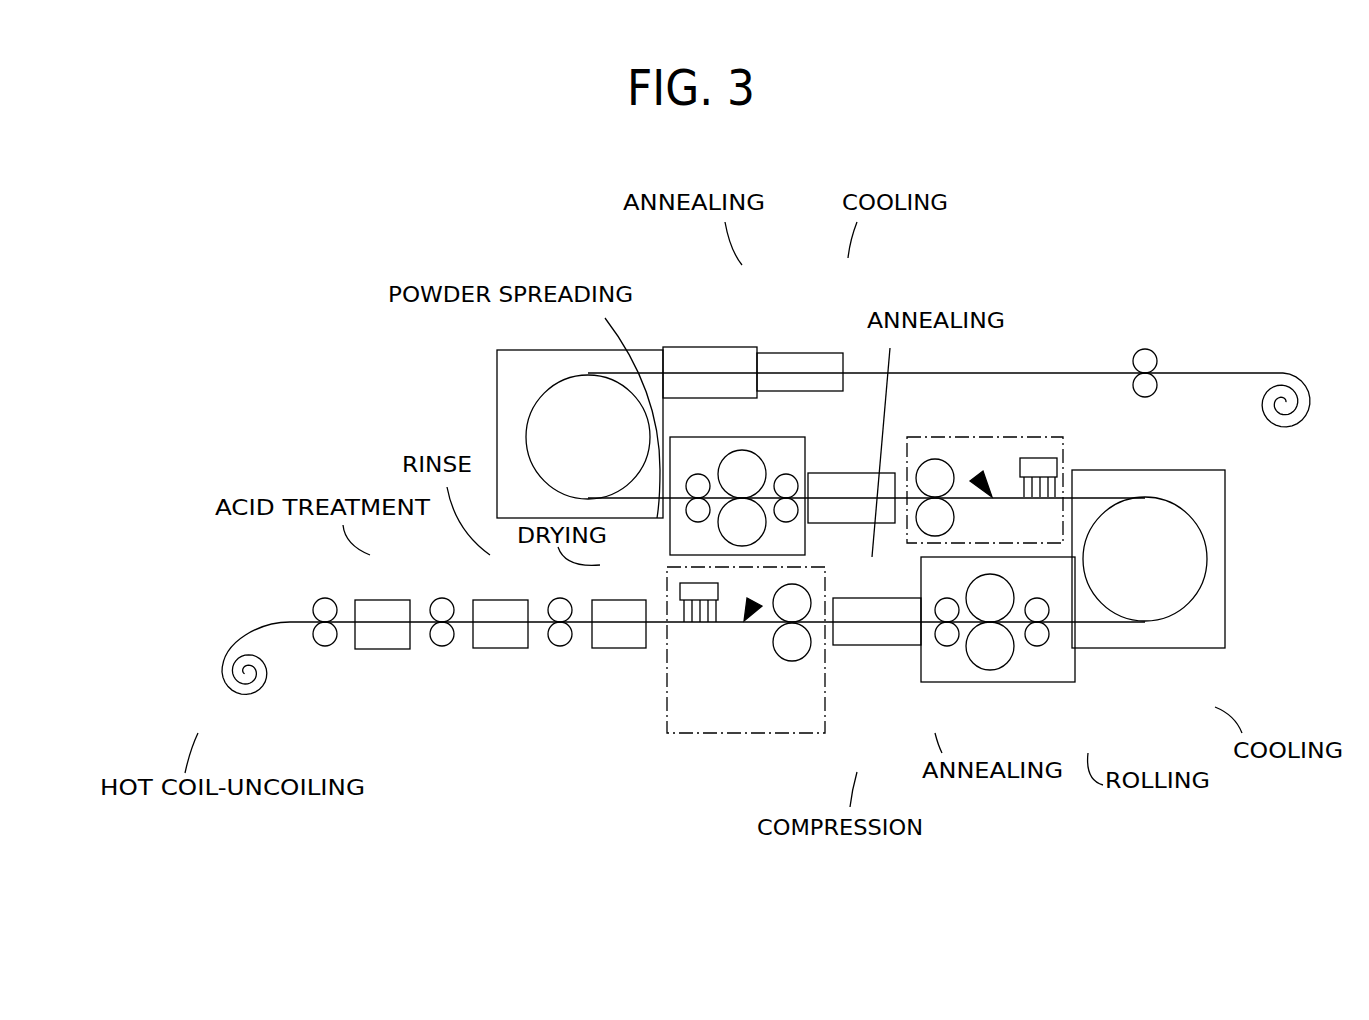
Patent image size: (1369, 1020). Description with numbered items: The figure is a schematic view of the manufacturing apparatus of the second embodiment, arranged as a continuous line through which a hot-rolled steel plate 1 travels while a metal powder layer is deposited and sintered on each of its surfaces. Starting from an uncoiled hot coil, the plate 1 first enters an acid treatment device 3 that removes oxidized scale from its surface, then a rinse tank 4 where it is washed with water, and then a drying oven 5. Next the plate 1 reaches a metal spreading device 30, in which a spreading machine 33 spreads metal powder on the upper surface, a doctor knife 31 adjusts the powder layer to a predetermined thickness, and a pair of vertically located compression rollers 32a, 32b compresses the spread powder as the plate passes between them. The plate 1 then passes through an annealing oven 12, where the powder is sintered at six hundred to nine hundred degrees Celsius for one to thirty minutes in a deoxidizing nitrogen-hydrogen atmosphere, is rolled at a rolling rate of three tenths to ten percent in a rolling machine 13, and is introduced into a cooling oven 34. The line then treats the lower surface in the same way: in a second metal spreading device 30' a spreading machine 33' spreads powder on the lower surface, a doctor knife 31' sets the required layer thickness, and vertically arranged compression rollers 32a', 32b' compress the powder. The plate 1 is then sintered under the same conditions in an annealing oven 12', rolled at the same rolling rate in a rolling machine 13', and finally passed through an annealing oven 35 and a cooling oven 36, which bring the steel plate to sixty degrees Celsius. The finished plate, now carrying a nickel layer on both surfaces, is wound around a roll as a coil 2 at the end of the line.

The plate 1 is at (238, 690).
The coil 2 is at (1298, 420).
The acid treatment device 3 is at (380, 600).
The rinse tank 4 is at (498, 600).
The drying oven 5 is at (613, 600).
The annealing oven 12 is at (889, 664).
The rolling machine 13 is at (1013, 652).
The metal spreading device 30 is at (728, 668).
The doctor knife 31 is at (749, 595).
The compression roller 32a is at (825, 589).
The compression roller 32b is at (830, 695).
The spreading machine 33 is at (678, 573).
The cooling oven 34 is at (1202, 648).
The annealing oven 35 is at (743, 347).
The cooling oven 36 is at (838, 353).
The annealing oven 12' is at (851, 478).
The rolling machine 13' is at (760, 483).
The metal spreading device 30' is at (1010, 477).
The doctor knife 31' is at (975, 444).
The compression roller 32a' is at (923, 444).
The compression roller 32b' is at (968, 517).
The spreading machine 33' is at (1032, 444).